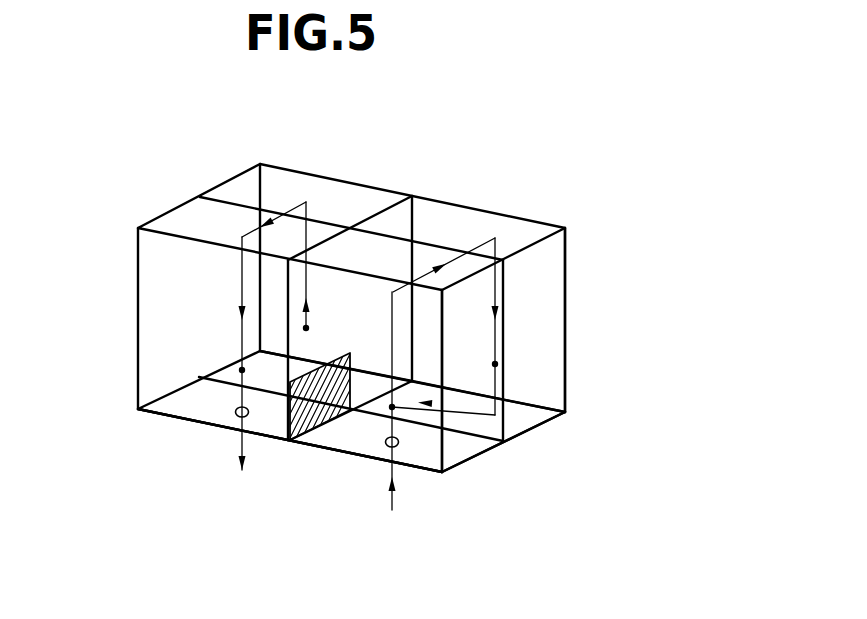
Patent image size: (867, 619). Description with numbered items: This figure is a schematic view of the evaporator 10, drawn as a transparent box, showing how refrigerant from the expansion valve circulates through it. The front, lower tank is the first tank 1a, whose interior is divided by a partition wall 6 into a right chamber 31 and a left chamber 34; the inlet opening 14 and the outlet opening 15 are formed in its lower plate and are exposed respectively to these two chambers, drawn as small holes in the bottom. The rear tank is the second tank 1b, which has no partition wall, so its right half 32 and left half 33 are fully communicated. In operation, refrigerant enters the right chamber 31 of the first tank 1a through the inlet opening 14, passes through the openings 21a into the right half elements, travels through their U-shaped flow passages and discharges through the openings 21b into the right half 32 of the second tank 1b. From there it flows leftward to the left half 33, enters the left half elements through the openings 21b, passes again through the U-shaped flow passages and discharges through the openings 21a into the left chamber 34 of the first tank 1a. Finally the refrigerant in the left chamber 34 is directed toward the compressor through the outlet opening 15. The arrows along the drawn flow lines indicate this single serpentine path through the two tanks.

The evaporator 10 is at (604, 226).
The first tank 1a is at (480, 454).
The second tank 1b is at (542, 424).
The partition wall 6 is at (290, 426).
The inlet opening 14 is at (385, 447).
The outlet opening 15 is at (232, 418).
The openings 21a is at (242, 370).
The openings 21b is at (307, 328).
The right chamber 31 is at (355, 442).
The right half 32 is at (523, 412).
The left half 33 is at (270, 377).
The left chamber 34 is at (178, 403).